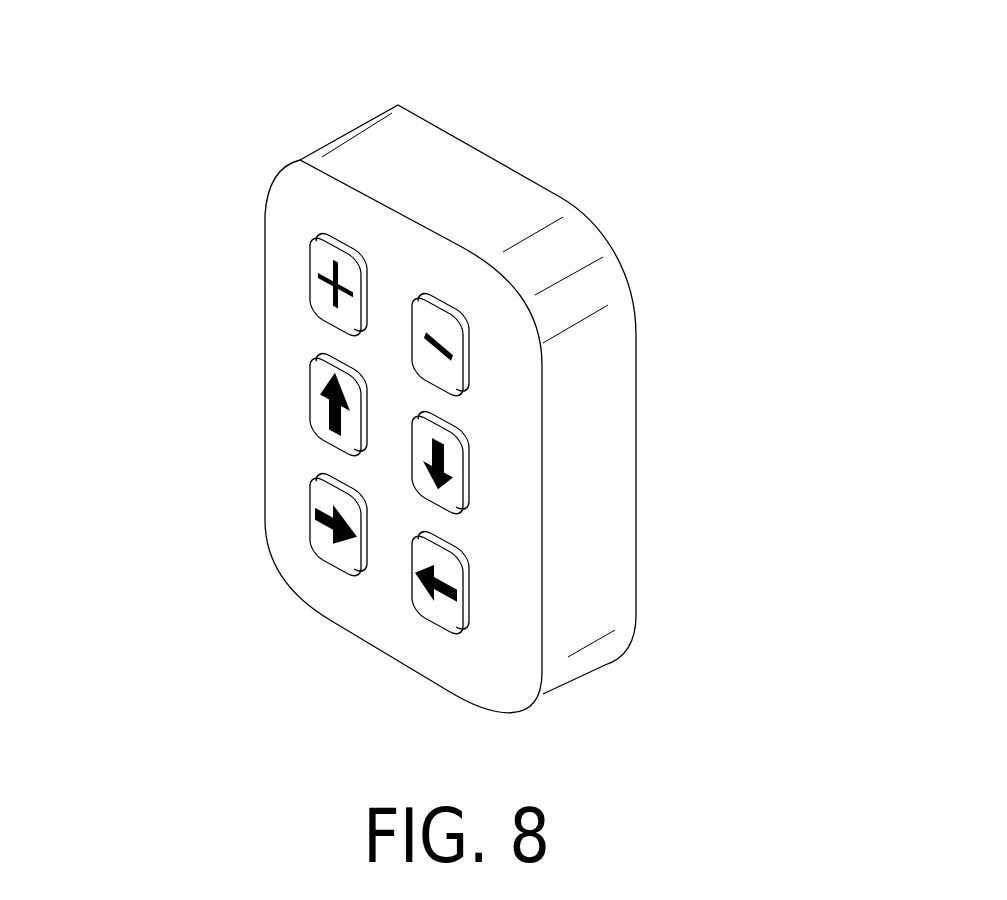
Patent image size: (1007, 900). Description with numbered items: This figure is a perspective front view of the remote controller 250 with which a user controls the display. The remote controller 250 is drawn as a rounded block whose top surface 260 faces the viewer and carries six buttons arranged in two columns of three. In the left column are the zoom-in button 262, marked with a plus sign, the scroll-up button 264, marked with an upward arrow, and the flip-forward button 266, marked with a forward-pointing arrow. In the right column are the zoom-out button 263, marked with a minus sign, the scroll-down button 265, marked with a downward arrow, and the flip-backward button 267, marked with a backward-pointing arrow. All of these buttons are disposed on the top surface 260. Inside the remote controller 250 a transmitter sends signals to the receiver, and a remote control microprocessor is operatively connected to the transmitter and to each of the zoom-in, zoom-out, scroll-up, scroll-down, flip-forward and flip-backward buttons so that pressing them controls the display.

The remote controller 250 is at (435, 143).
The top surface 260 is at (367, 612).
The zoom-in button 262 is at (310, 263).
The zoom-out button 263 is at (445, 327).
The scroll-up button 264 is at (310, 395).
The scroll-down button 265 is at (447, 460).
The flip-forward button 266 is at (310, 537).
The flip-backward button 267 is at (445, 573).